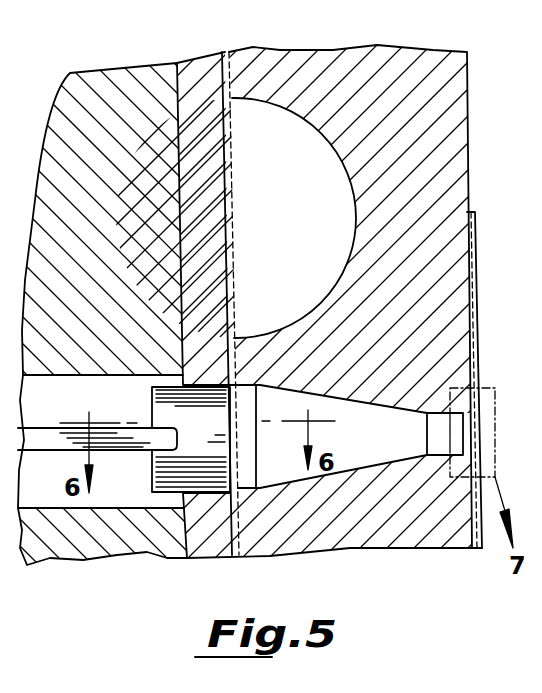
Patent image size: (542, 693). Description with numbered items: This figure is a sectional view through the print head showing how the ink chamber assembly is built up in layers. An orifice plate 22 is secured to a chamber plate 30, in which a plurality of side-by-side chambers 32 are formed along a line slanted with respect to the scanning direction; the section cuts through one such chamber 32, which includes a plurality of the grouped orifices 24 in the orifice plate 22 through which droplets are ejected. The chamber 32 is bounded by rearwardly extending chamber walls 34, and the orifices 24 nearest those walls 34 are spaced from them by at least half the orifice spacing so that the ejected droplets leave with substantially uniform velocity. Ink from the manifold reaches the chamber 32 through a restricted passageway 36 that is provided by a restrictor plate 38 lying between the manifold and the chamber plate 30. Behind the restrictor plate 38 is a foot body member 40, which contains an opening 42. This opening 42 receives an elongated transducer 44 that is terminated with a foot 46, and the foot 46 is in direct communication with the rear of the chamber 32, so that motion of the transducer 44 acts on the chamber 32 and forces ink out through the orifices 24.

The orifice plate 22 is at (478, 238).
The orifices 24 is at (478, 448).
The chamber plate 30 is at (422, 93).
The chamber 32 is at (367, 452).
The rearwardly extending chamber walls 34 is at (295, 137).
The restricted passageway 36 is at (230, 295).
The restrictor plate 38 is at (222, 60).
The foot body member 40 is at (195, 90).
The opening 42 is at (58, 503).
The elongated transducer 44 is at (42, 427).
The foot 46 is at (170, 497).